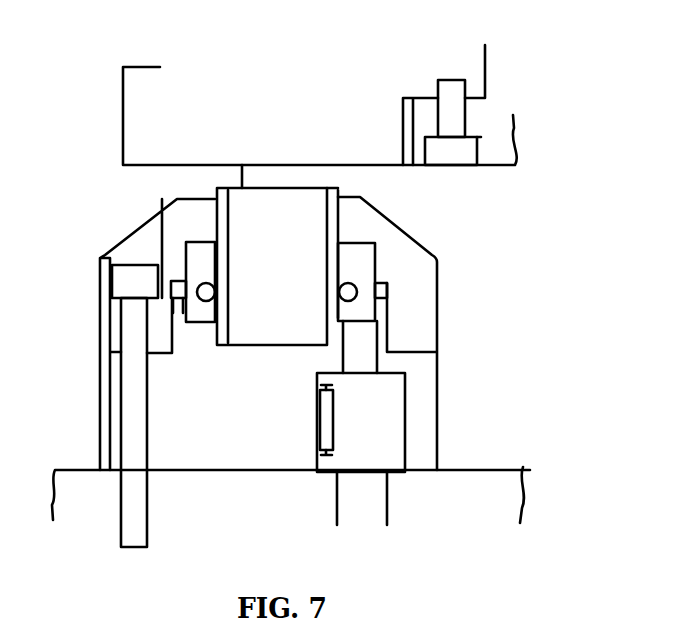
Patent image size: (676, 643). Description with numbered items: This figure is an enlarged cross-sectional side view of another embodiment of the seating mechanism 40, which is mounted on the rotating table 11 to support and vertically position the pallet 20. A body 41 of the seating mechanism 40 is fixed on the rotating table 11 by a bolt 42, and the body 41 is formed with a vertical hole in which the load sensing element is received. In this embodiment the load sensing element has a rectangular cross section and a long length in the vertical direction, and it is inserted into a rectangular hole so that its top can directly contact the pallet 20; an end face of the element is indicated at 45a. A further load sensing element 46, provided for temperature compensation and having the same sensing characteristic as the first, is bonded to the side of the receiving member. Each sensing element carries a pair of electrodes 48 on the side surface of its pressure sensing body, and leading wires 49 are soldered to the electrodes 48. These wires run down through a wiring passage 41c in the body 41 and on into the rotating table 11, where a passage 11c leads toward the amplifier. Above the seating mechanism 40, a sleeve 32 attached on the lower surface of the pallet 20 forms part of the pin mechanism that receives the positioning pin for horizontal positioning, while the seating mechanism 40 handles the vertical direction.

The pallet 20 is at (186, 140).
The sleeve 32 is at (493, 90).
The seating mechanism 40 is at (455, 255).
The body 41 is at (183, 425).
The wiring passage 41c is at (386, 420).
The bolt 42 is at (130, 340).
The rotary member 45a is at (300, 260).
The load sensing element 46 is at (325, 418).
The electrode 48 is at (220, 222).
The leading wire 49 is at (196, 295).
The rotating table 11 is at (520, 467).
The positioning pin 11c is at (386, 495).